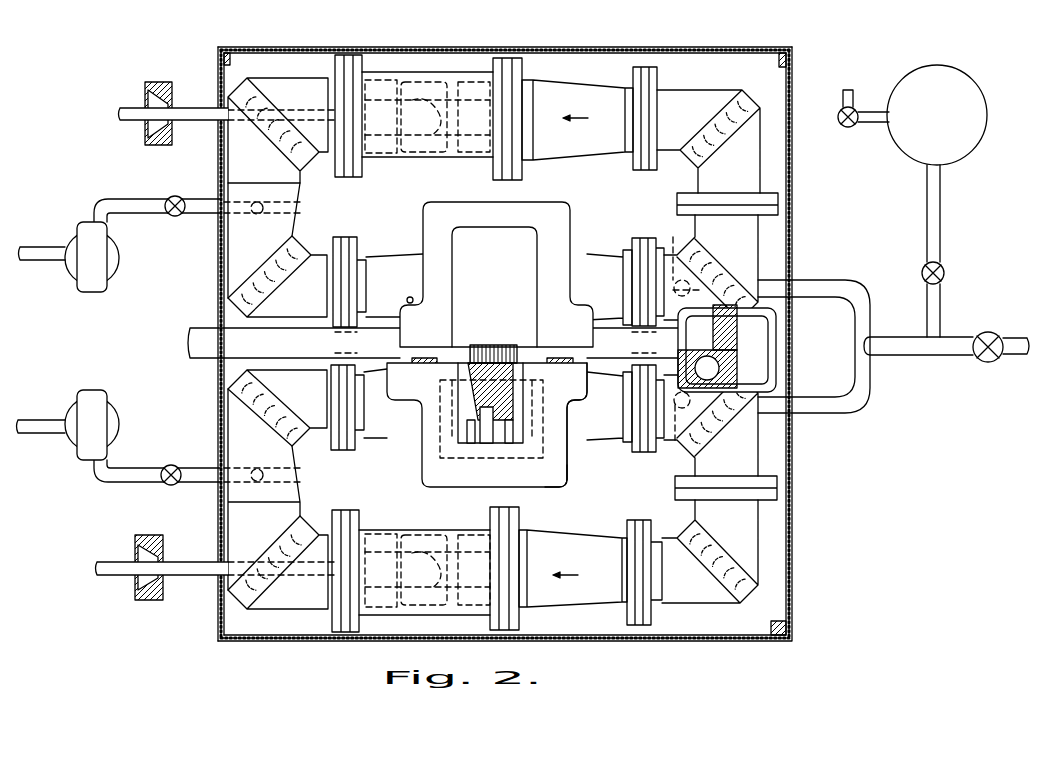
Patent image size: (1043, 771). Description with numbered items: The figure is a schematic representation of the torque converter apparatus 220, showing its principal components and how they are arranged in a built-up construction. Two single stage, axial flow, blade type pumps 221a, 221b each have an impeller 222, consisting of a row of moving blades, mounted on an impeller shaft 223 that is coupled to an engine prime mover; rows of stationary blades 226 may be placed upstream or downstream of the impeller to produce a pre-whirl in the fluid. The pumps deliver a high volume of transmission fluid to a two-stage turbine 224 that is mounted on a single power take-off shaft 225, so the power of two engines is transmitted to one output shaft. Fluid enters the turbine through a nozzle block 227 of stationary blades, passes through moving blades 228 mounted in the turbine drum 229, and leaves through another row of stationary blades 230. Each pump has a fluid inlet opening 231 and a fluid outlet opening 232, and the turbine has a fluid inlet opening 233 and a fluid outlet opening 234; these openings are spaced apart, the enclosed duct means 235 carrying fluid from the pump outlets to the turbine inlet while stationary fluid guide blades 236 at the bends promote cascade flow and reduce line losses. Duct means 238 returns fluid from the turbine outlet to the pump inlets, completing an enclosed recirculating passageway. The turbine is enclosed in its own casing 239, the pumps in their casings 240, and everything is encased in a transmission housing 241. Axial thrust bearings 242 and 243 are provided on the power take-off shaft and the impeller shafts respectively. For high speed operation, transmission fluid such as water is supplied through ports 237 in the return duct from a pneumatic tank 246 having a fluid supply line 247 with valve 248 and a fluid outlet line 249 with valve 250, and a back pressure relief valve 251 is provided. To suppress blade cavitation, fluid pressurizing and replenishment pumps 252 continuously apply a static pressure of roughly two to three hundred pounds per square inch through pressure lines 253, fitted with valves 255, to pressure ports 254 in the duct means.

The torque converter apparatus 220 is at (795, 513).
The pump 221a is at (393, 610).
The pump 221b is at (431, 77).
The impeller 222 is at (424, 146).
The impeller shaft 223 is at (300, 100).
The turbine 224 is at (565, 412).
The power take-off shaft 225 is at (205, 352).
The stationary blades 226 is at (387, 82).
The nozzle block 227 is at (468, 441).
The moving blades 228 is at (482, 444).
The turbine drum 229 is at (490, 388).
The stationary blades 230 is at (508, 446).
The fluid inlet opening 231 is at (533, 80).
The fluid outlet opening 232 is at (322, 76).
The fluid inlet opening 233 is at (420, 398).
The fluid outlet opening 234 is at (566, 408).
The duct means 235 is at (238, 261).
The stationary fluid guide blades 236 is at (218, 303).
The ports 237 is at (673, 228).
The duct means 238 is at (753, 162).
The turbine casing 239 is at (551, 484).
The pump casing 240 is at (464, 74).
The transmission housing 241 is at (680, 48).
The axial thrust bearing 242 is at (740, 352).
The axial thrust bearing 243 is at (152, 82).
The pneumatic tank 246 is at (972, 97).
The fluid supply line 247 is at (870, 111).
The valve 248 is at (840, 120).
The fluid outlet line 249 is at (935, 222).
The valve 250 is at (943, 273).
The back pressure relief valve 251 is at (983, 356).
The fluid pressurizing and fluid replenishment pump 252 is at (82, 282).
The pressure line 253 is at (158, 214).
The pressure port 254 is at (283, 207).
The valve 255 is at (177, 196).